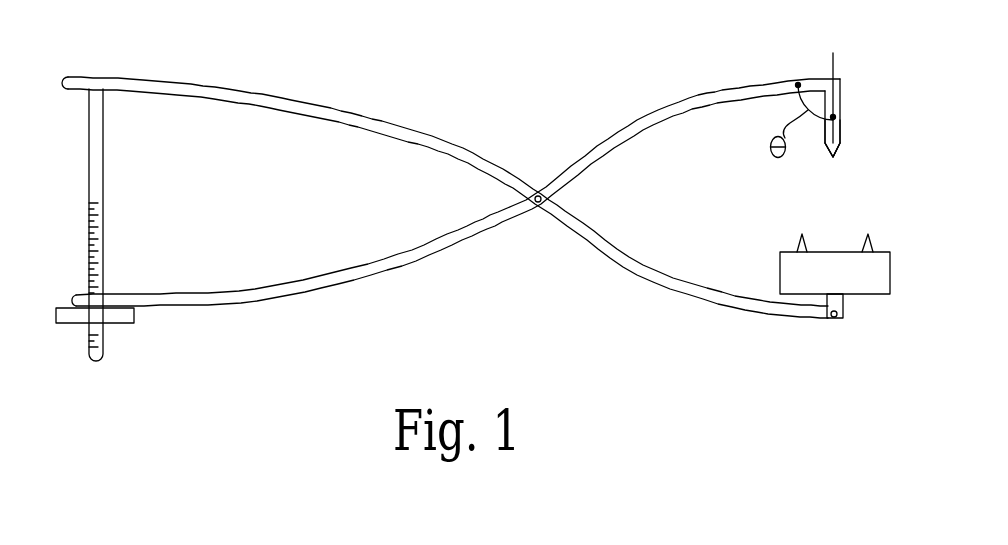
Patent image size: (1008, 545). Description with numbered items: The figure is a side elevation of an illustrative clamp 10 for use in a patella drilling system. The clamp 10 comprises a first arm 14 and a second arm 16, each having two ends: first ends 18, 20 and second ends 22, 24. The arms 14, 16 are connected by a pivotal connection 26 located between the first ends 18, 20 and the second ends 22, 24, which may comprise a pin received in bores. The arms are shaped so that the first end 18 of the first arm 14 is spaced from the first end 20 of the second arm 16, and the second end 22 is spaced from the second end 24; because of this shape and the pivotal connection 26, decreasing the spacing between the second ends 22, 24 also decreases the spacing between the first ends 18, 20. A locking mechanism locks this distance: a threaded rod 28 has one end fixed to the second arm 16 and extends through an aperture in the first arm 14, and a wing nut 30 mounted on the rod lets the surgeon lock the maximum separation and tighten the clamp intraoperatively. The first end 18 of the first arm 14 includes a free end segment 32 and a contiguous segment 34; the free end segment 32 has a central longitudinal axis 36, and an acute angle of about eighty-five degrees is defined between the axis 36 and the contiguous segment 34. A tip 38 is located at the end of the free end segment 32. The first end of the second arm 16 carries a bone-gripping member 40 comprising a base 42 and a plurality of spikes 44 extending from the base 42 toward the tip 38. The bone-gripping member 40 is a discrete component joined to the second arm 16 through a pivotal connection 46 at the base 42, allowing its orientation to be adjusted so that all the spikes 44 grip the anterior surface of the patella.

The clamp 10 is at (268, 82).
The first arm 14 is at (185, 307).
The second arm 16 is at (133, 80).
The first end 18 is at (842, 72).
The first end 20 is at (817, 322).
The second end 22 is at (75, 297).
The second end 24 is at (72, 88).
The pivotal connection 26 is at (538, 196).
The threaded rod 28 is at (97, 222).
The wing nut 30 is at (120, 325).
The free end segment 32 is at (841, 130).
The contiguous segment 34 is at (797, 84).
The central longitudinal axis 36 is at (836, 62).
The tip 38 is at (832, 153).
The bone-gripping member 40 is at (809, 288).
The base 42 is at (790, 270).
The spikes 44 is at (872, 236).
The pivotal connection 46 is at (840, 316).